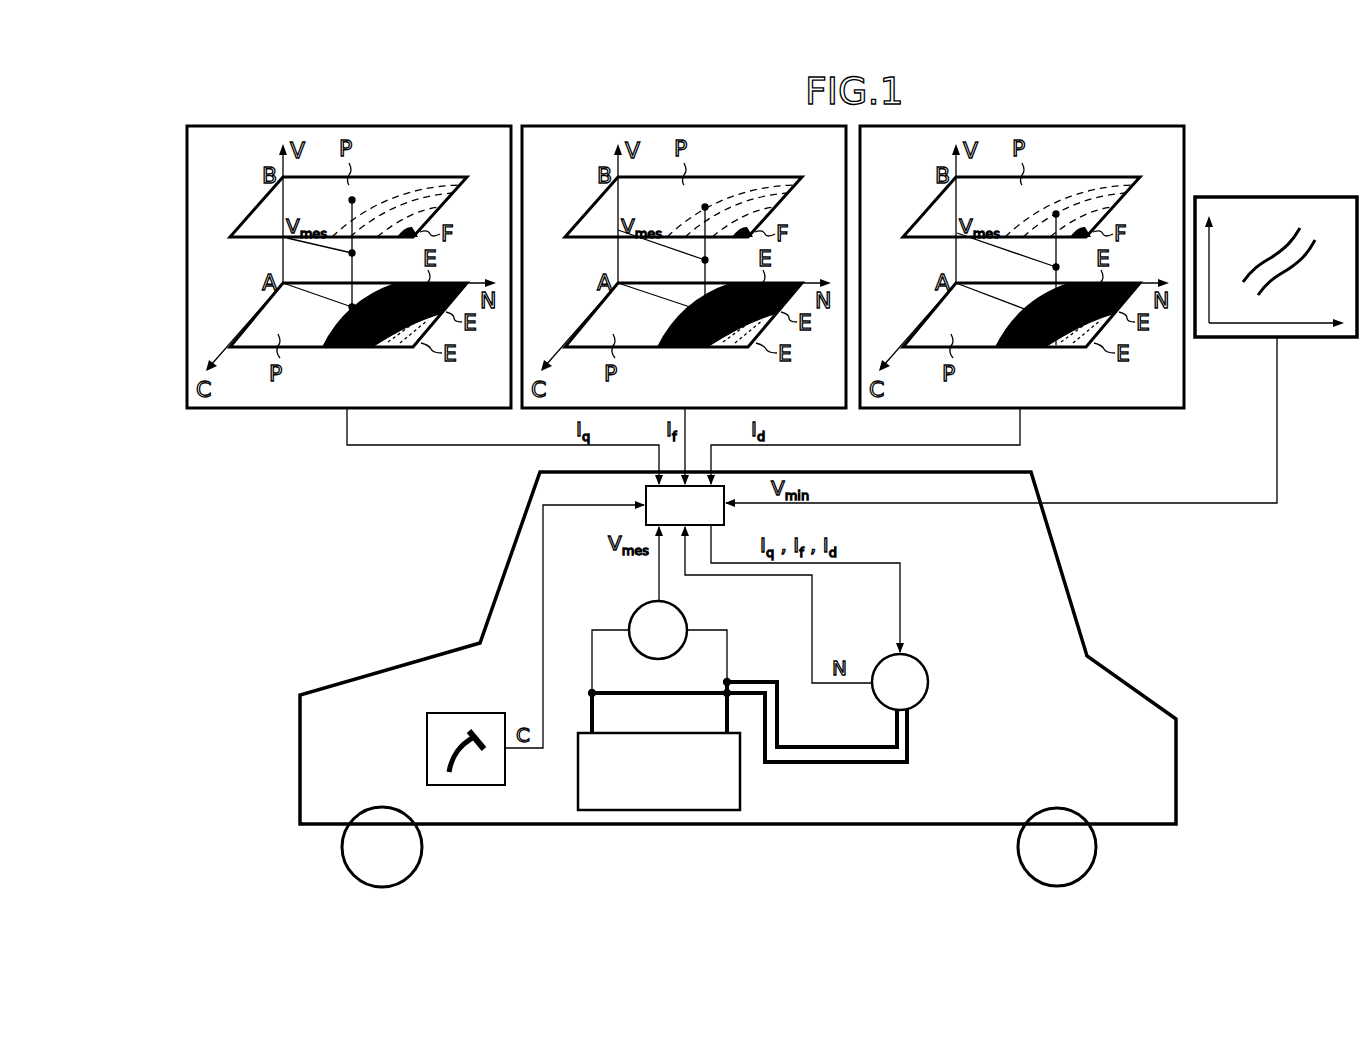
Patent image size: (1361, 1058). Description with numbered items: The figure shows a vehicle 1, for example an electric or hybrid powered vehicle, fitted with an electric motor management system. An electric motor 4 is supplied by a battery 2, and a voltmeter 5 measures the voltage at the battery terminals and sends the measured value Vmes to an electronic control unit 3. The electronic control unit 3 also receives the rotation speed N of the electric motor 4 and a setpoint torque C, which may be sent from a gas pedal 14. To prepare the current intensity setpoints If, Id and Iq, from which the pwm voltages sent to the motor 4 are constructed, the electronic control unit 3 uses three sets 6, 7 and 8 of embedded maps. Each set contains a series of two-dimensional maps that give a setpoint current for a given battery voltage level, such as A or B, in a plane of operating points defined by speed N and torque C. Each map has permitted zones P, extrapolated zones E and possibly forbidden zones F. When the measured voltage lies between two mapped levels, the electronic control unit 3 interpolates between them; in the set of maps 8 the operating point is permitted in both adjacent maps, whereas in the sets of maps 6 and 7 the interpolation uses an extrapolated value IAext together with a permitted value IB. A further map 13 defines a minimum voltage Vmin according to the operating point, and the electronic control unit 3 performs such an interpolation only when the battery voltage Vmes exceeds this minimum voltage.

The vehicle 1 is at (1178, 770).
The battery 2 is at (578, 774).
The electronic control unit 3 is at (644, 492).
The electric motor 4 is at (930, 672).
The voltmeter 5 is at (632, 605).
The set of embedded maps 6 is at (1020, 125).
The set of embedded maps 7 is at (683, 125).
The set of embedded maps 8 is at (348, 125).
The map 13 is at (1277, 197).
The gas pedal 14 is at (426, 750).